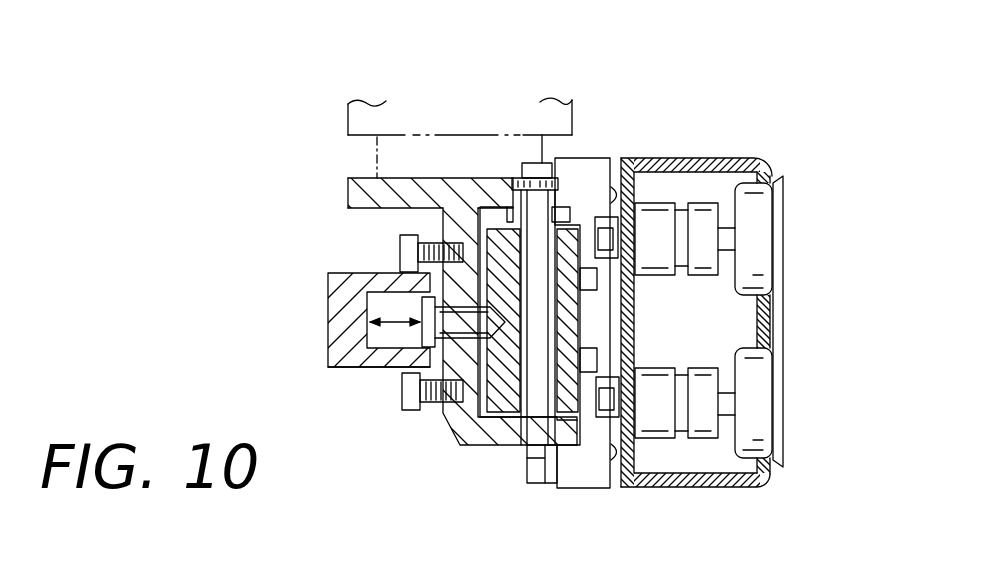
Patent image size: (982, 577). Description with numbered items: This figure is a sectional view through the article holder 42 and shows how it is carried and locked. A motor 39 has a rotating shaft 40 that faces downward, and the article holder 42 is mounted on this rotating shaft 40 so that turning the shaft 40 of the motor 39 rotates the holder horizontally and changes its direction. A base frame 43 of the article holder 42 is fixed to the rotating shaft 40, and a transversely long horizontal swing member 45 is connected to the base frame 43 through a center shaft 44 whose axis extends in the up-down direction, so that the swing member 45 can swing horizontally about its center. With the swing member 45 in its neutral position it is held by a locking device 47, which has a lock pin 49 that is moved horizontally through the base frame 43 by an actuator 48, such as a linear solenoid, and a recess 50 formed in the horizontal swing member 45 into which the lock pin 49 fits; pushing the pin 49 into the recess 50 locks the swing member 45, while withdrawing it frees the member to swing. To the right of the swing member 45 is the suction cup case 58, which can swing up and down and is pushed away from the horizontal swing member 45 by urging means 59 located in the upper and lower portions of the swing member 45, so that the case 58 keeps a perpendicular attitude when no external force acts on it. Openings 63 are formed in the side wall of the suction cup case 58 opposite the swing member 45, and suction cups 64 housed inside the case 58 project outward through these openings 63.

The motor 39 is at (553, 125).
The rotating shaft 40 is at (405, 157).
The article holder 42 is at (755, 150).
The base frame 43 is at (487, 445).
The center shaft 44 is at (563, 447).
The horizontal swing member 45 is at (570, 310).
The locking device 47 is at (328, 308).
The actuator 48 is at (347, 358).
The lock pin 49 is at (453, 316).
The recess 50 is at (478, 397).
The suction cup case 58 is at (695, 162).
The urging means 59 is at (603, 170).
The openings 63 is at (780, 174).
The suction cups 64 is at (765, 232).